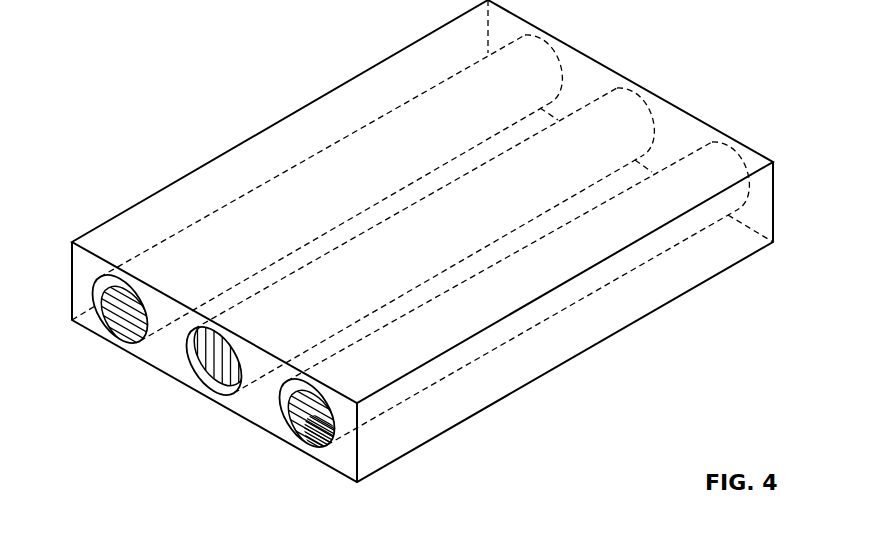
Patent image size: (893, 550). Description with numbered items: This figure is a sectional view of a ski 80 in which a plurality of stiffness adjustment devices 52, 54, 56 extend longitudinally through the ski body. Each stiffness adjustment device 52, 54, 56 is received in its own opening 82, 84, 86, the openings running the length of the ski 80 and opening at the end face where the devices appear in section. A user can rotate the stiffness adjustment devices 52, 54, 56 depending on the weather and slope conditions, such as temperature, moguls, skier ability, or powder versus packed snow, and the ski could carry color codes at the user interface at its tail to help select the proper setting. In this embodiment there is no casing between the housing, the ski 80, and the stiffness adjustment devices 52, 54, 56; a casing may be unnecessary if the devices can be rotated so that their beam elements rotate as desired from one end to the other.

The stiffness adjustment device 52 is at (95, 318).
The stiffness adjustment device 54 is at (205, 358).
The stiffness adjustment device 56 is at (303, 425).
The ski 80 is at (580, 342).
The opening 82 is at (218, 206).
The opening 84 is at (228, 393).
The opening 86 is at (403, 400).